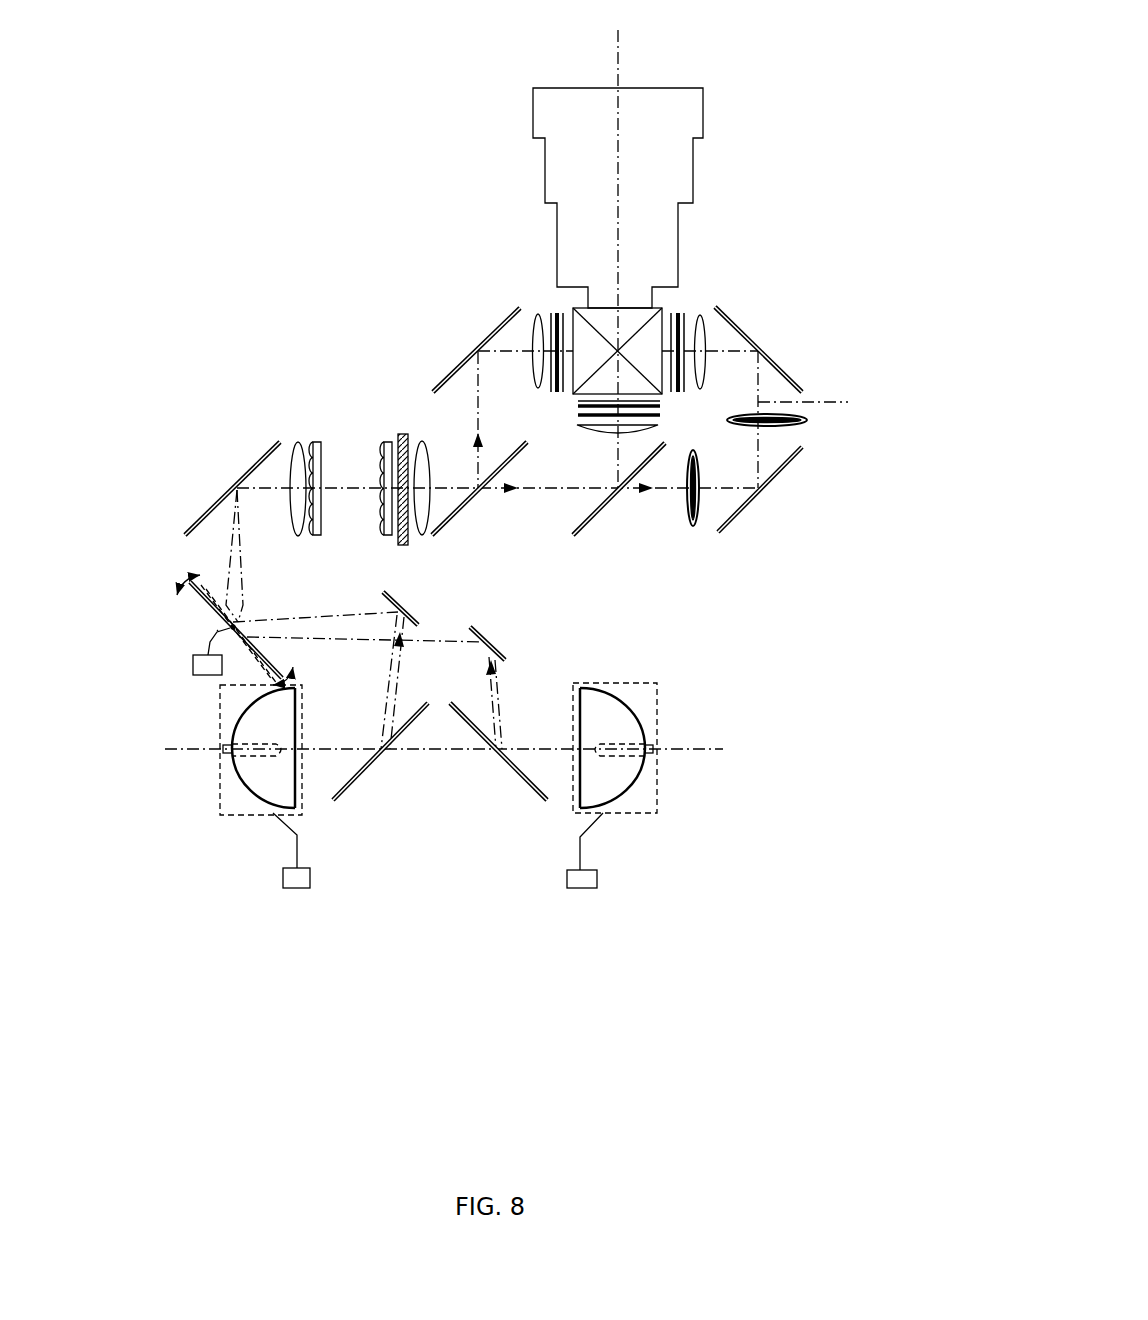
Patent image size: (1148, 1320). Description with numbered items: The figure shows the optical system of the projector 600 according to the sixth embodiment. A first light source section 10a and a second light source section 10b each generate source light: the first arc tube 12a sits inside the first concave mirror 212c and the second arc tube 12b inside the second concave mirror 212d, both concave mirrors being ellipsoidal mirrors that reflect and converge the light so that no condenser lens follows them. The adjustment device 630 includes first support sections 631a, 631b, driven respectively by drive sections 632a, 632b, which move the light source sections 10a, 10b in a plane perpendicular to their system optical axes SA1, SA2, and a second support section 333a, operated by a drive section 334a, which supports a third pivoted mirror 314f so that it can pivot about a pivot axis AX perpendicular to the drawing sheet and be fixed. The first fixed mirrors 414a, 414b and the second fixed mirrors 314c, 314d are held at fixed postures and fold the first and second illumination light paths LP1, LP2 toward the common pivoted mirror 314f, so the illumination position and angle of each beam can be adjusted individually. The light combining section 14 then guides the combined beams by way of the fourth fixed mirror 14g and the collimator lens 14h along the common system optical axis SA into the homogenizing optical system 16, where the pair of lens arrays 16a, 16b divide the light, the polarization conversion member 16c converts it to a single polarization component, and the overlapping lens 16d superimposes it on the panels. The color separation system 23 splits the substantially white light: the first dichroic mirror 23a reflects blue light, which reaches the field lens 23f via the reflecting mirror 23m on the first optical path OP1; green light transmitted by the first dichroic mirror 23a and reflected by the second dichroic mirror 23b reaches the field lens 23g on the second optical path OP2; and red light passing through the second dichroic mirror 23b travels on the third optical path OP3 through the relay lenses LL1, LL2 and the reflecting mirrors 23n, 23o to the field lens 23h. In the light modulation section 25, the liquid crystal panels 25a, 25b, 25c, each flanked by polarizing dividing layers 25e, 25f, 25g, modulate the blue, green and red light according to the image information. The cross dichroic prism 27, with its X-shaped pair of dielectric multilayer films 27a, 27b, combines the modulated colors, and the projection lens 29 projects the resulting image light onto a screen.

The projector 600 is at (862, 48).
The projection lens 29 is at (577, 160).
The cross dichroic prism 27 is at (643, 298).
The dielectric multilayer film 27a is at (652, 317).
The dielectric multilayer film 27b is at (585, 313).
The light modulation section 25 is at (555, 305).
The liquid crystal panel 25a is at (540, 357).
The liquid crystal panel 25b is at (580, 410).
The liquid crystal panel 25c is at (680, 343).
The polarizing dividing layer 25e is at (562, 387).
The polarizing dividing layer 25f is at (662, 413).
The polarizing dividing layer 25g is at (675, 393).
The color separation system 23 is at (777, 503).
The first dichroic mirror 23a is at (467, 512).
The second dichroic mirror 23b is at (602, 517).
The field lens 23f is at (503, 318).
The field lens 23g is at (595, 432).
The field lens 23h is at (705, 363).
The reflecting mirror 23m is at (460, 362).
The reflecting mirror 23n is at (783, 470).
The reflecting mirror 23o is at (793, 373).
The first lens LL1 is at (695, 523).
The second lens LL2 is at (807, 420).
The first optical path OP1 is at (478, 422).
The second optical path OP2 is at (612, 465).
The third optical path OP3 is at (782, 419).
The homogenizing optical system 16 is at (353, 383).
The lens array 16a is at (317, 442).
The lens array 16b is at (387, 442).
The polarization conversion member 16c is at (405, 433).
The overlapping lens 16d is at (423, 535).
The light combining section 14 is at (207, 553).
The fourth fixed mirror 14g is at (212, 507).
The collimator lens 14h is at (297, 440).
The system optical axis SA is at (348, 490).
The system optical axis SA1 is at (330, 600).
The system optical axis SA2 is at (347, 640).
The pivot axis AX is at (240, 618).
The first illumination light path LP1 is at (397, 670).
The second illumination light path LP2 is at (498, 682).
The second fixed mirror 314c is at (420, 610).
The second fixed mirror 314d is at (495, 643).
The third pivoted mirror 314f is at (197, 603).
The second support section 333a is at (217, 630).
The drive section 334a is at (195, 675).
The first fixed mirror 414a is at (340, 800).
The first fixed mirror 414b is at (540, 797).
The adjustment device 630 is at (218, 860).
The first light source section 10a is at (340, 830).
The second light source section 10b is at (540, 825).
The first support section 631a is at (220, 770).
The first support section 631b is at (607, 683).
The first arc tube 12a is at (240, 760).
The second arc tube 12b is at (627, 757).
The first concave mirror 212c is at (267, 800).
The second concave mirror 212d is at (612, 800).
The drive section 632a is at (297, 888).
The drive section 632b is at (580, 888).